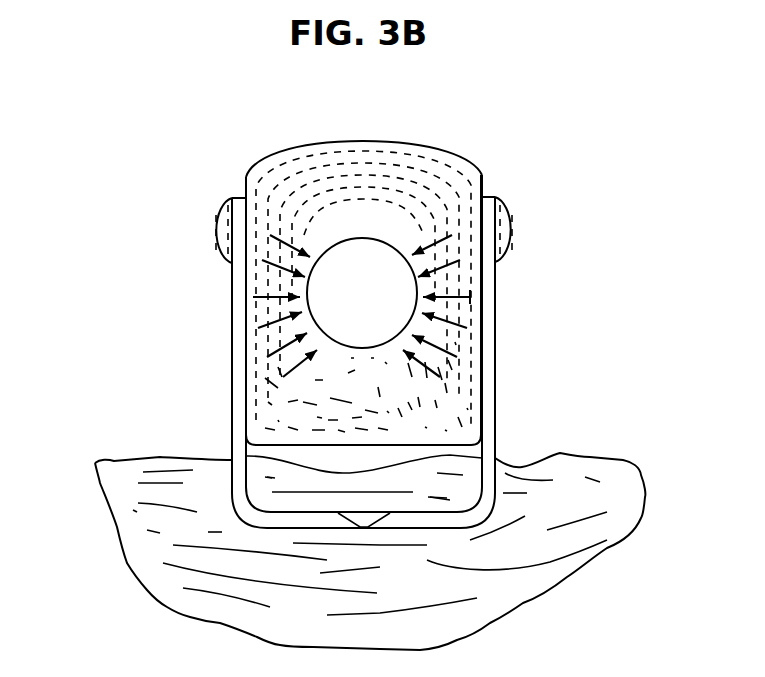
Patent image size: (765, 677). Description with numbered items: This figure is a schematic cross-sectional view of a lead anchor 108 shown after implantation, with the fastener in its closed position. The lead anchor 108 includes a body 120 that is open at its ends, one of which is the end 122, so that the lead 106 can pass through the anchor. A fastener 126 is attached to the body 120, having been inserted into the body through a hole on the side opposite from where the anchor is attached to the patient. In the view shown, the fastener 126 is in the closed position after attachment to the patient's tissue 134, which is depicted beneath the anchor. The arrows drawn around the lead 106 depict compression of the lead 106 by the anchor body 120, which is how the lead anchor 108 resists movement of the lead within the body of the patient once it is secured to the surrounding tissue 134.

The lead 106 is at (385, 310).
The lead anchor 108 is at (170, 146).
The body 120 is at (275, 408).
The end 122 is at (395, 208).
The fastener 126 is at (495, 398).
The tissue 134 is at (552, 545).